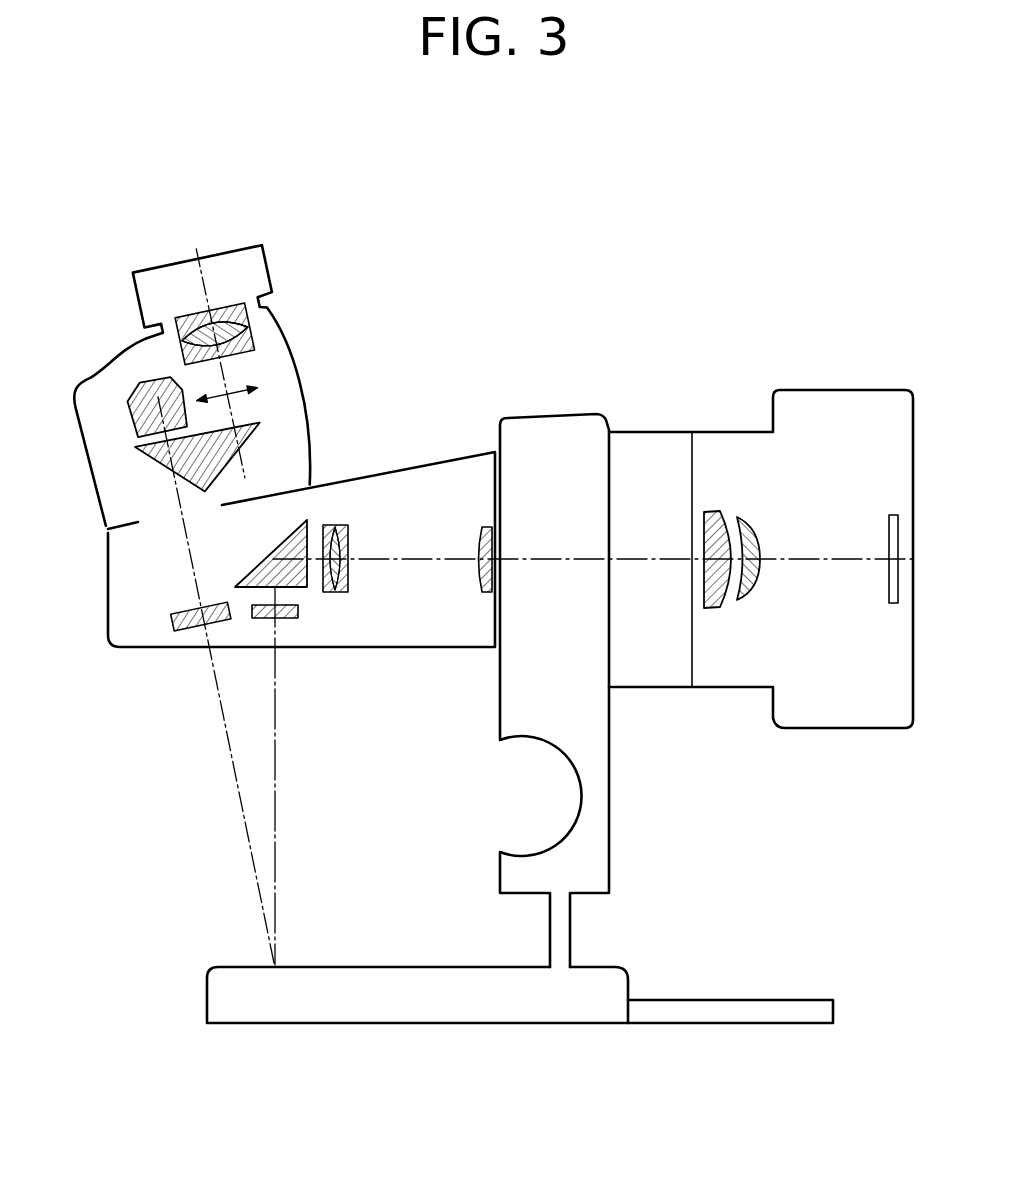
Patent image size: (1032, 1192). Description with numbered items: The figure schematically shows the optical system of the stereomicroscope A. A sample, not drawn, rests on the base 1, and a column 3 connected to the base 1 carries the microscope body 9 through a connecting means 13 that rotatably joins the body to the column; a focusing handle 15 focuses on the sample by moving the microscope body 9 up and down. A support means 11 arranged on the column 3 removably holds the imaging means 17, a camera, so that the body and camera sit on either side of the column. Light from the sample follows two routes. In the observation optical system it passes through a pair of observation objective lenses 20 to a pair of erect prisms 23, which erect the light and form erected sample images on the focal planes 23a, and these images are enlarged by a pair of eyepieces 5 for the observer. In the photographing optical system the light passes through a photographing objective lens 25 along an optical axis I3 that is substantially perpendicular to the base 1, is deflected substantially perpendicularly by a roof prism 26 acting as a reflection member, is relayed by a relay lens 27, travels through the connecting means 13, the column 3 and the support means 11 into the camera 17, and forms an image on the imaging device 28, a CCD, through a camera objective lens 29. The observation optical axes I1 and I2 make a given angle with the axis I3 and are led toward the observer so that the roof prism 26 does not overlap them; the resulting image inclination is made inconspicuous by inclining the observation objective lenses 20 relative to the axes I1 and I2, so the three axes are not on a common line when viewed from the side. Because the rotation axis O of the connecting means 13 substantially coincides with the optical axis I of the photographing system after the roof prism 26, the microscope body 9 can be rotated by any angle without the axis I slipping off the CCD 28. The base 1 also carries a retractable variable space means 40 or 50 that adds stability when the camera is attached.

The base 1 is at (240, 967).
The column 3 is at (590, 428).
The eyepiece 5 is at (172, 277).
The microscope body 9 is at (376, 456).
The support means 11 is at (643, 445).
The connecting means 13 is at (510, 505).
The focusing handle 15 is at (484, 823).
The imaging means 17 is at (803, 410).
The observation objective lens 20 is at (170, 620).
The erect prism 23 is at (147, 463).
The focal plane 23a is at (236, 392).
The photographing objective lens 25 is at (295, 617).
The roof prism 26 is at (306, 516).
The relay lens 27 is at (345, 523).
The imaging device 28 is at (893, 512).
The camera objective lens 29 is at (737, 510).
The variable space means 40 is at (723, 1026).
The variable space means 50 is at (730, 1065).
The stereomicroscope A is at (393, 307).
The rotation axis O is at (565, 562).
The optical axis I is at (430, 562).
The optical axis I1 is at (226, 750).
The optical axis I2 is at (201, 680).
The optical axis I3 is at (277, 828).